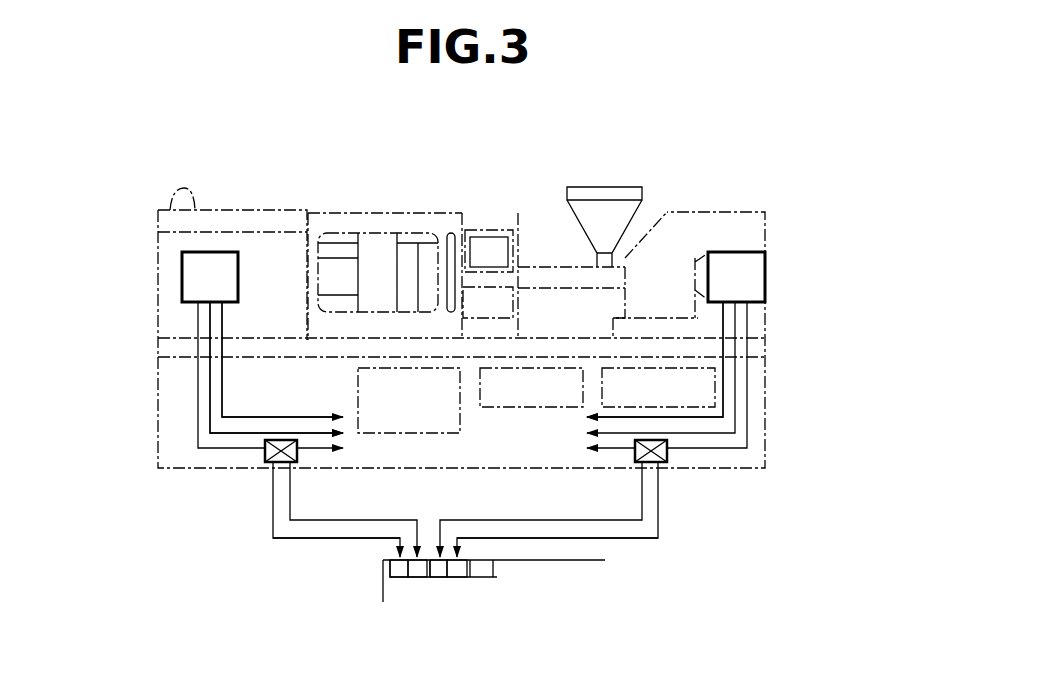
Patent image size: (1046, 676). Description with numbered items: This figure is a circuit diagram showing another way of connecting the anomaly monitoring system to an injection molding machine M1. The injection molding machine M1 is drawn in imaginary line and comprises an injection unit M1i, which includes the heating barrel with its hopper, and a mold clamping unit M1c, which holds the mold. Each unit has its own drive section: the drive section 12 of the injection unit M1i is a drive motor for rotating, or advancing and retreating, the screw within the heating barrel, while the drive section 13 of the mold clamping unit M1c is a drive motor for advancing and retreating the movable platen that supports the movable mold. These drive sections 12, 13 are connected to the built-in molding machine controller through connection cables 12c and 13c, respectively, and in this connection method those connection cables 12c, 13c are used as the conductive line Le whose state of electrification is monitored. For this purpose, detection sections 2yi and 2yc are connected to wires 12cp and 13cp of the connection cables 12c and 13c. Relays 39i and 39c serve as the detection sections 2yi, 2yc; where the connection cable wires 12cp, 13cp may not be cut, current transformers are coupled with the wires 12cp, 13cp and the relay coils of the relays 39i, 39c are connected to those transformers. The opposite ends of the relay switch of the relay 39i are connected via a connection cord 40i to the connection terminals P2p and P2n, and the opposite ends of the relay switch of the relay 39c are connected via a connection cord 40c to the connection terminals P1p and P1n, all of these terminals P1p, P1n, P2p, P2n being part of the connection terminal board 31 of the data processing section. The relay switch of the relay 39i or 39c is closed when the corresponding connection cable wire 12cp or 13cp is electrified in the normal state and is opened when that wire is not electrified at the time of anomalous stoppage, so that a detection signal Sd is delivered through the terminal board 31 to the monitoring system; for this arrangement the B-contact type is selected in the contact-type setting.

The injection molding machine M1 is at (668, 162).
The mold clamping unit M1c is at (360, 210).
The injection unit M1i is at (600, 185).
The drive section 13 is at (182, 268).
The drive section 12 is at (765, 275).
The connection cable 13c is at (193, 385).
The connection cable wire 13cp is at (197, 440).
The connection cable 12c is at (750, 388).
The connection cable wire 12cp is at (747, 442).
The conductive line Le is at (193, 370).
The relay 39c is at (297, 455).
The relay 39i is at (637, 455).
The detection section 2yc is at (260, 460).
The detection section 2yi is at (672, 463).
The connection cord 40c is at (283, 543).
The connection cord 40i is at (633, 543).
The detection signal Sd is at (323, 540).
The connection terminal board 31 is at (463, 567).
The connection terminal P1p is at (398, 578).
The connection terminal P1n is at (417, 578).
The connection terminal P2p is at (430, 560).
The connection terminal P2n is at (468, 560).